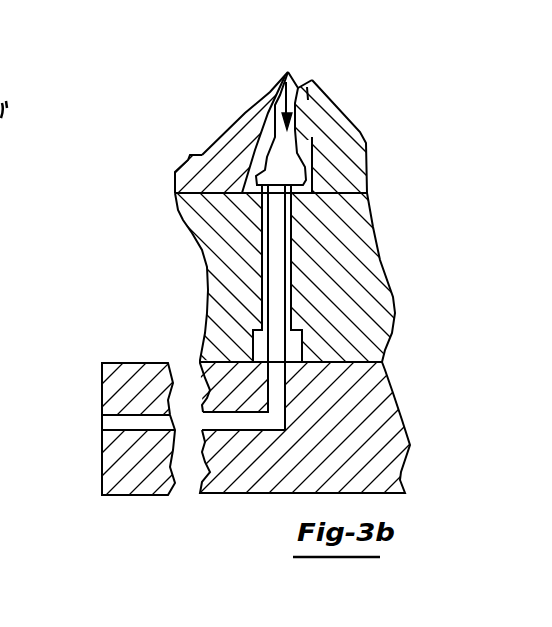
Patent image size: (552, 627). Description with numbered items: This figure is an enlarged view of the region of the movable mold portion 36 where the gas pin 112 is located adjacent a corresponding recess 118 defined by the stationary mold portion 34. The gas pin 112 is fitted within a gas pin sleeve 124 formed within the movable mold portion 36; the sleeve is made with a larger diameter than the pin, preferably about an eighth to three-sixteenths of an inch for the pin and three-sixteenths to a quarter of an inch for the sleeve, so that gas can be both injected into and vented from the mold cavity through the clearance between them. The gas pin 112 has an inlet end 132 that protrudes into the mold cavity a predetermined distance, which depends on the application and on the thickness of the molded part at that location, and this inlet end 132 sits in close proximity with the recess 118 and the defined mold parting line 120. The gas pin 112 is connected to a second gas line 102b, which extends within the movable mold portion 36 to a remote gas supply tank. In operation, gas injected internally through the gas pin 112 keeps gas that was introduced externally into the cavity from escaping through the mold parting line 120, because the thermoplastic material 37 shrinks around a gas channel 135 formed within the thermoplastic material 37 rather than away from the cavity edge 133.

The movable mold portion 36 is at (367, 178).
The stationary mold portion 34 is at (236, 118).
The thermoplastic material 37 is at (311, 81).
The recess 118 is at (232, 122).
The mold parting line 120 is at (175, 194).
The inlet end 132 is at (278, 190).
The cavity edge 133 is at (318, 160).
The gas channel 135 is at (286, 82).
The gas pin 112 is at (278, 237).
The gas pin sleeve 124 is at (293, 265).
The second gas line 102b is at (113, 425).